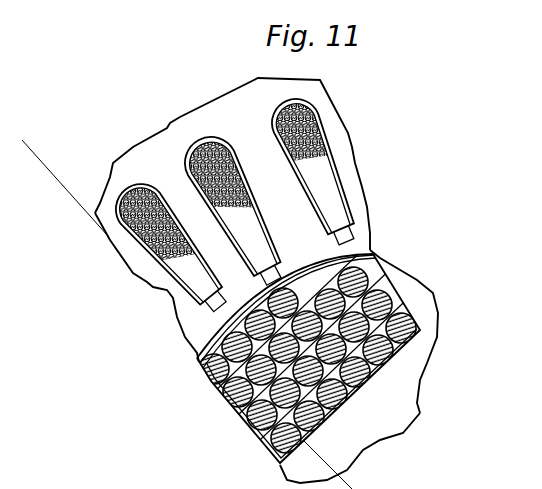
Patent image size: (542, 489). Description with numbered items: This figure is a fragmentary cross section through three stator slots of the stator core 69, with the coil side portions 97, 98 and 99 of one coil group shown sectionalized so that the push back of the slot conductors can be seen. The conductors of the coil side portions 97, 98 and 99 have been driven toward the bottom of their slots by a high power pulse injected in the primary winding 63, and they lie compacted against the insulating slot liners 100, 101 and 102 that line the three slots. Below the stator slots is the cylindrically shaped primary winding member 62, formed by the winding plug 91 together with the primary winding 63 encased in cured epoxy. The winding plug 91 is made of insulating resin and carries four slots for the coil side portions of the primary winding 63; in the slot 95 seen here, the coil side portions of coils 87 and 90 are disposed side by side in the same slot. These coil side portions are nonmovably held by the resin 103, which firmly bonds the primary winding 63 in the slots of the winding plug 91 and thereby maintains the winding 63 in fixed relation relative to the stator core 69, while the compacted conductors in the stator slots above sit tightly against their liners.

The primary winding member 62 is at (418, 292).
The primary winding 63 is at (358, 400).
The stator core 69 is at (186, 104).
The coil 87 is at (366, 276).
The coil 90 is at (201, 375).
The winding plug 91 is at (403, 285).
The slot 95 is at (372, 380).
The coil side portion 97 is at (128, 187).
The coil side portion 98 is at (217, 140).
The coil side portion 99 is at (310, 107).
The insulating slot liner 100 is at (203, 253).
The insulating slot liner 101 is at (259, 220).
The insulating slot liner 102 is at (337, 182).
The resin 103 is at (213, 348).